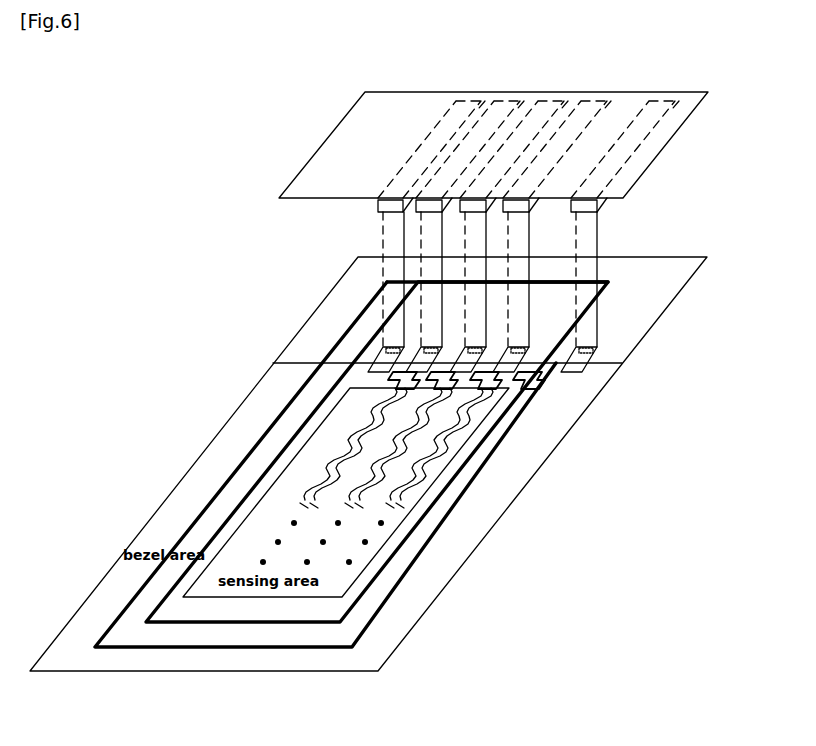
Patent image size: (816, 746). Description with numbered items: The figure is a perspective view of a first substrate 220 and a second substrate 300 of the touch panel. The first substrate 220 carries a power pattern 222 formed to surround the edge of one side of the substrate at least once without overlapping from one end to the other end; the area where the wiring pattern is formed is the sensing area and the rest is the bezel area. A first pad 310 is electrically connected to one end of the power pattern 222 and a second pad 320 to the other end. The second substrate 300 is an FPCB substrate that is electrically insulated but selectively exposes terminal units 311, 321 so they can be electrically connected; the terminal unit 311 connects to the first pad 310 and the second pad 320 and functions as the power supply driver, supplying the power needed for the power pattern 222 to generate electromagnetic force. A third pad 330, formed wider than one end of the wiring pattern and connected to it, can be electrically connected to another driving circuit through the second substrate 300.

The second substrate 300 is at (346, 162).
The terminal unit 311 is at (385, 212).
The terminal unit 321 is at (588, 208).
The first pad 310 is at (378, 357).
The second pad 320 is at (592, 357).
The first substrate 220 is at (645, 310).
The power pattern 222 is at (220, 648).
The third pad 330 is at (412, 378).